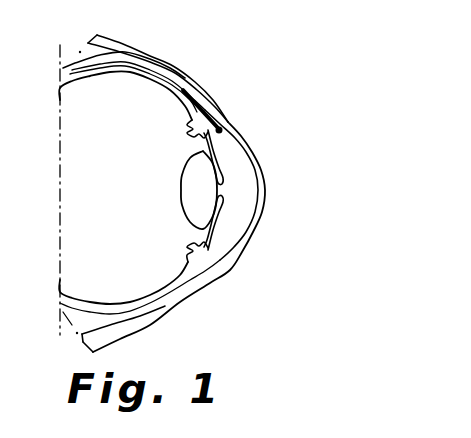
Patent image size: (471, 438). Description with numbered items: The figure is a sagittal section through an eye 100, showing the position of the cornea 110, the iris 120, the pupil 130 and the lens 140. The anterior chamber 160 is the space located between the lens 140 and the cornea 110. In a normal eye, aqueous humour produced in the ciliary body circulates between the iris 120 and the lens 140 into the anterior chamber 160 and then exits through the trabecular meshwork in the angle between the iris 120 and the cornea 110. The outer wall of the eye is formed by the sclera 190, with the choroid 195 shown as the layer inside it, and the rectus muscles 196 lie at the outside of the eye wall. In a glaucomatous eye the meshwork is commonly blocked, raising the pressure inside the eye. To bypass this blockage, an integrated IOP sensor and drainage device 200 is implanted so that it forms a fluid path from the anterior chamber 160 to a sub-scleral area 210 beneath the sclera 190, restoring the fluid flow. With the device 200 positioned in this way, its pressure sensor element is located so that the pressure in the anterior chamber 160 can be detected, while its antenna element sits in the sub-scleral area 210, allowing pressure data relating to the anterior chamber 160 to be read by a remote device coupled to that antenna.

The eye 100 is at (199, 314).
The cornea 110 is at (253, 153).
The iris 120 is at (220, 247).
The pupil 130 is at (222, 190).
The lens 140 is at (197, 205).
The anterior chamber 160 is at (240, 188).
The sclera 190 is at (173, 72).
The choroid 195 is at (147, 77).
The rectus muscles 196 is at (115, 52).
The integrated IOP sensor and drainage device 200 is at (225, 128).
The sub-scleral area 210 is at (200, 97).